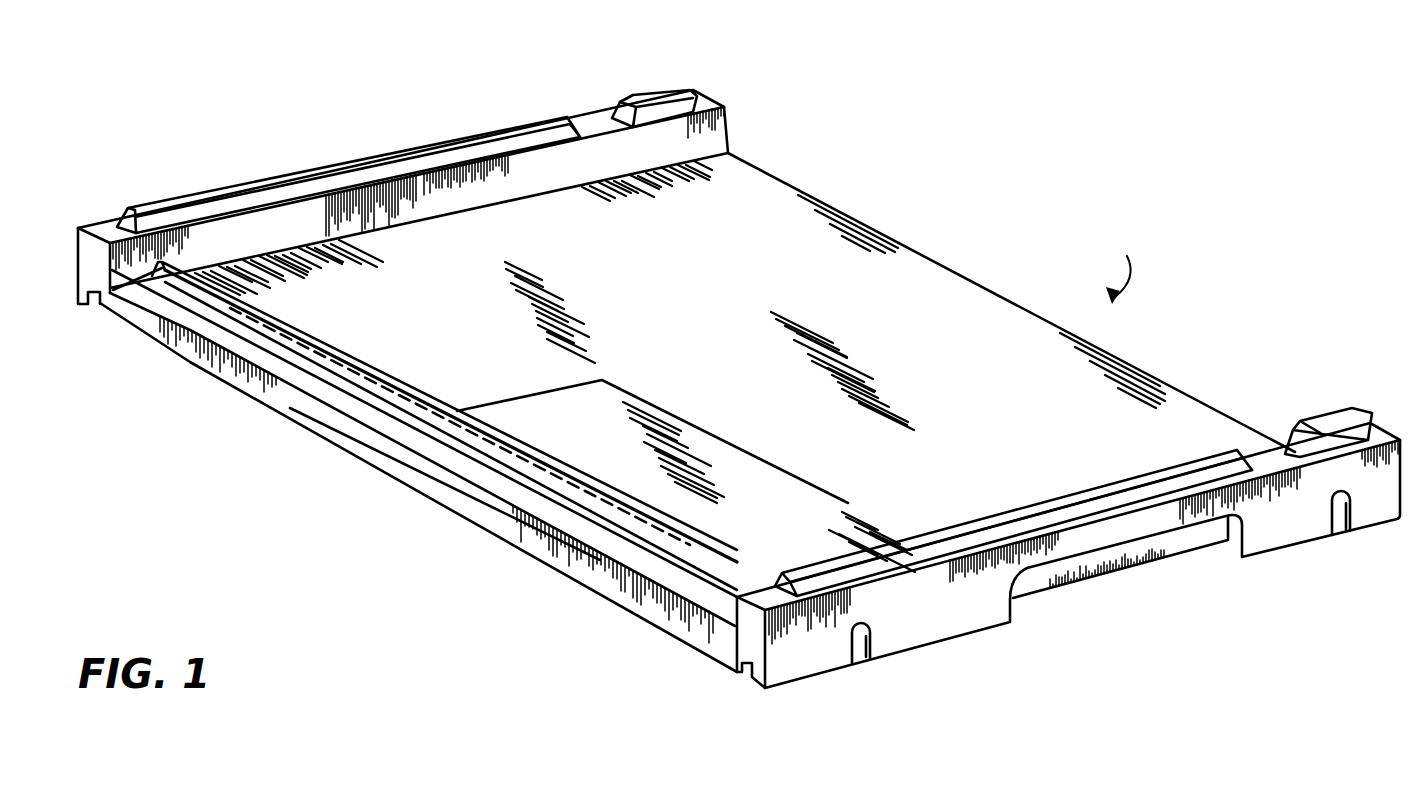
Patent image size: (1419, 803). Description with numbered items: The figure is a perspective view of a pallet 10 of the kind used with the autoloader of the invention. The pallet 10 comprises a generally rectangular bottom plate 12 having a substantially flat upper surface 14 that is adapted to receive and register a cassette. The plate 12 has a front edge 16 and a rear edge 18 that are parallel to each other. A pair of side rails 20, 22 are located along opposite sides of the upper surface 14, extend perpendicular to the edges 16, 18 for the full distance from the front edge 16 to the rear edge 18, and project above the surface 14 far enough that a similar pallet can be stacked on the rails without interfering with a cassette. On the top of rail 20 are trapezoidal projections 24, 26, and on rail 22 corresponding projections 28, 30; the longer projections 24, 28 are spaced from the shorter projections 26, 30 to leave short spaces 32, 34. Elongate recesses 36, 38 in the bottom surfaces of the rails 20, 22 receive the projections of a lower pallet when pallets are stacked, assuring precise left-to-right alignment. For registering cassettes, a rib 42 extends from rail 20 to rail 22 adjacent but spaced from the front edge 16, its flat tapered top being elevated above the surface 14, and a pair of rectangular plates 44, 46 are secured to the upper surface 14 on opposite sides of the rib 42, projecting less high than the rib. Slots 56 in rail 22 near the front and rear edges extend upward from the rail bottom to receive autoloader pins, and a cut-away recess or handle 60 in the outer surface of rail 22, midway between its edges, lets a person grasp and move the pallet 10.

The pallet 10 is at (1137, 252).
The bottom plate 12 is at (937, 265).
The upper surface 14 is at (732, 294).
The front edge 16 is at (307, 420).
The rear edge 18 is at (835, 207).
The side rail 20 is at (547, 177).
The side rail 22 is at (980, 622).
The projection 24 is at (320, 170).
The projection 26 is at (662, 92).
The projection 28 is at (943, 533).
The projection 30 is at (1333, 420).
The space 32 is at (585, 120).
The space 34 is at (1250, 470).
The recess 36 is at (93, 306).
The recess 38 is at (753, 674).
The rib 42 is at (357, 378).
The rectangular plate 44 is at (782, 490).
The rectangular plate 46 is at (503, 487).
The slot 56 is at (862, 652).
The recess or handle 60 is at (1230, 532).